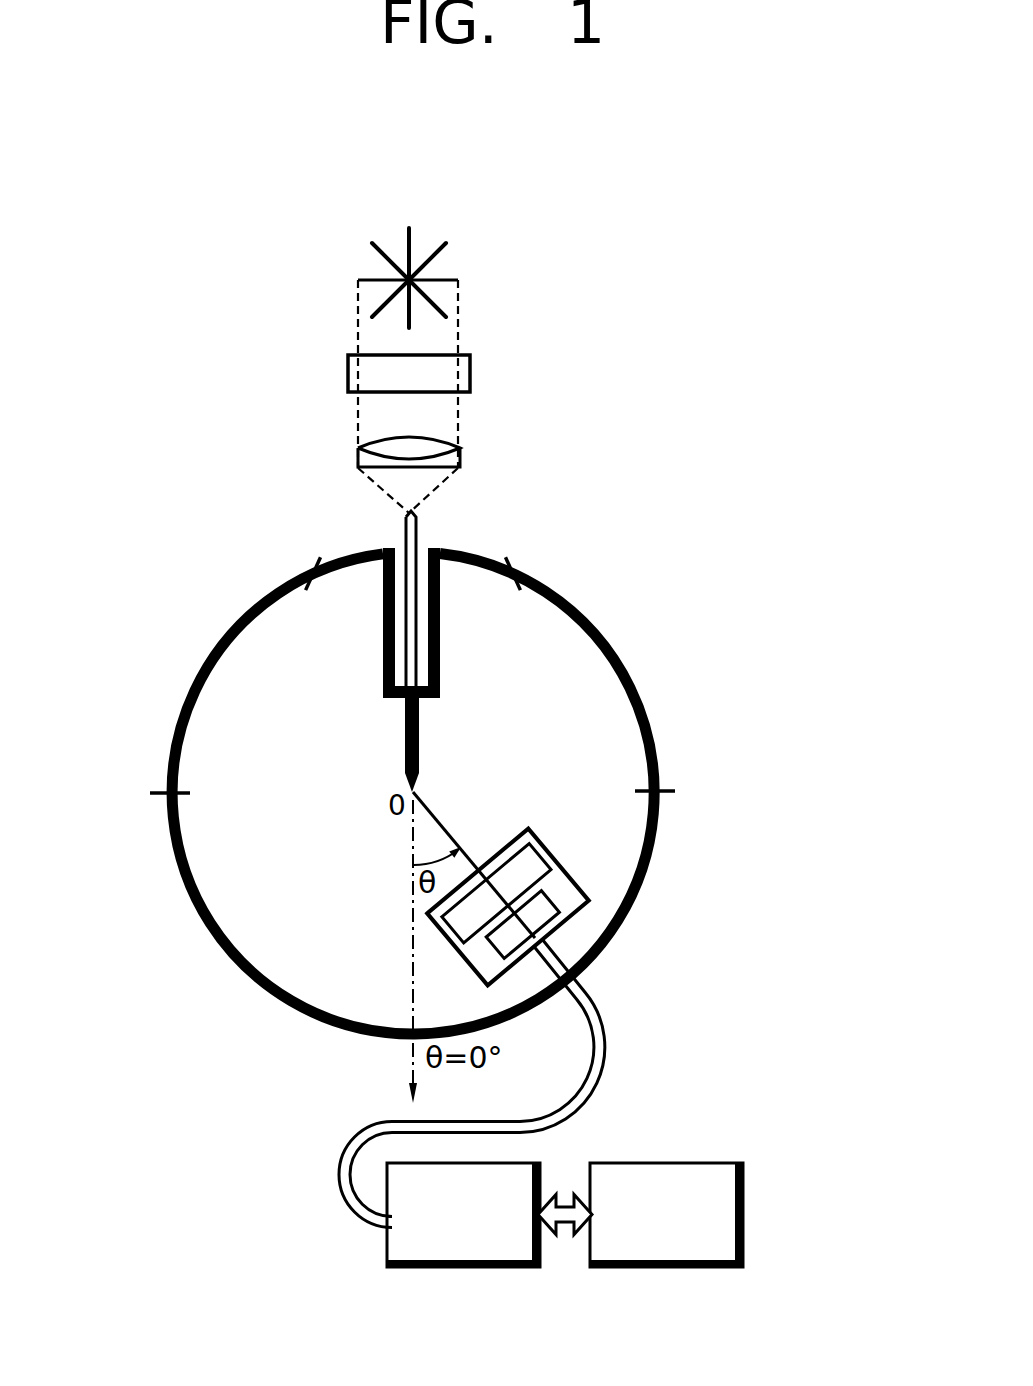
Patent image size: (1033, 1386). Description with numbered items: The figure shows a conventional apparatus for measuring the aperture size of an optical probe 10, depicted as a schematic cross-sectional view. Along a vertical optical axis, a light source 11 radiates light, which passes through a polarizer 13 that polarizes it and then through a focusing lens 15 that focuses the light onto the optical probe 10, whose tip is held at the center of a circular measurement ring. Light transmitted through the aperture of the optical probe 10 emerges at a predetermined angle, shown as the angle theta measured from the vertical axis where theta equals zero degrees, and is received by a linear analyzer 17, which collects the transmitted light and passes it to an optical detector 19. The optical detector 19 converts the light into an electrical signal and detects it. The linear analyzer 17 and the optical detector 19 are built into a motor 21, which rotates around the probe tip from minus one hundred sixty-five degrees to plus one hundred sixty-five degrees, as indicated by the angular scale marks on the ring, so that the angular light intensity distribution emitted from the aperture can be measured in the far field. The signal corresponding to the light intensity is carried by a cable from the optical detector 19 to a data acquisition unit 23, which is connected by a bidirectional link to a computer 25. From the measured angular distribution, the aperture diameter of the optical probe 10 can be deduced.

The optical probe 10 is at (420, 747).
The light source 11 is at (455, 280).
The polarizer 13 is at (453, 375).
The focusing lens 15 is at (448, 450).
The linear analyzer 17 is at (547, 853).
The optical detector 19 is at (549, 902).
The motor 21 is at (463, 960).
The data acquisition unit 23 is at (467, 1267).
The computer 25 is at (668, 1267).